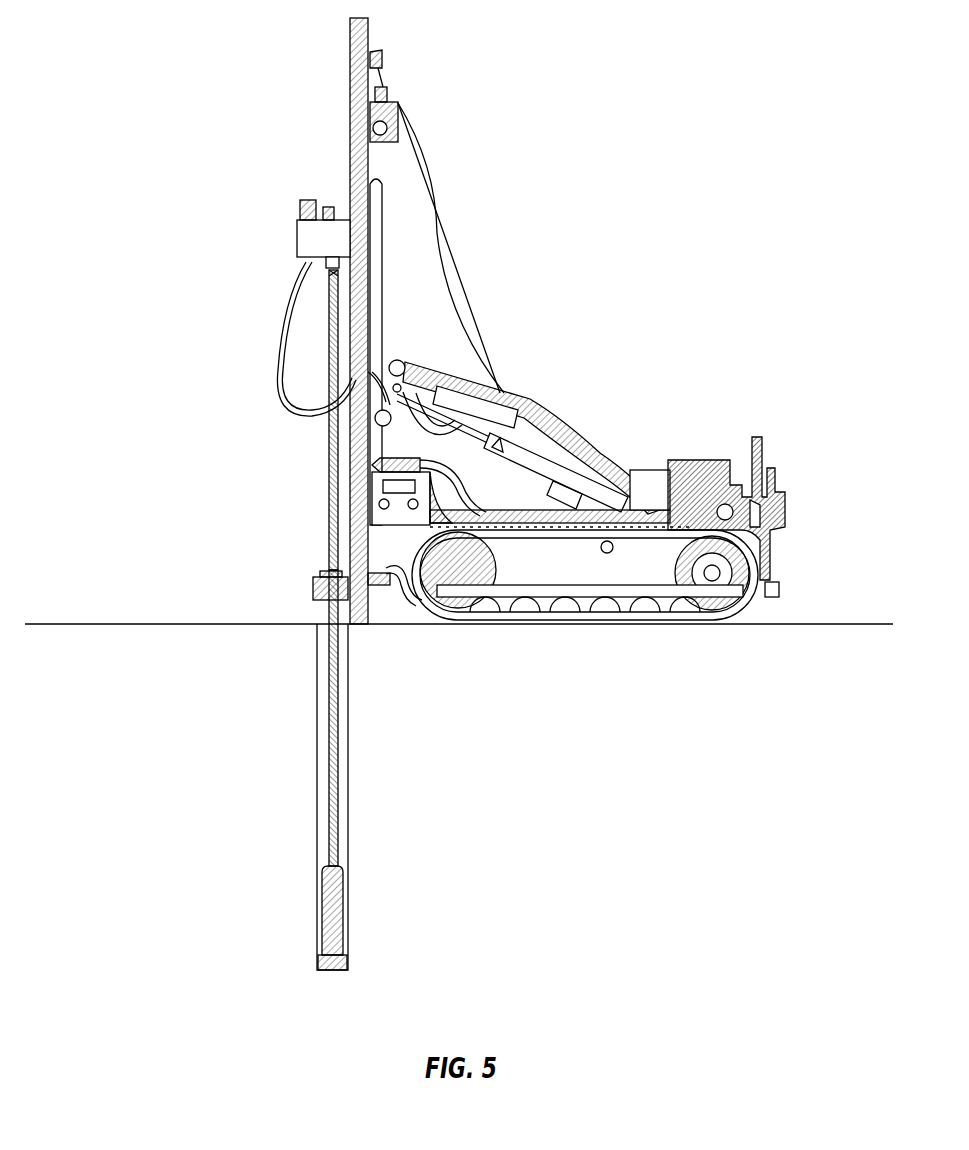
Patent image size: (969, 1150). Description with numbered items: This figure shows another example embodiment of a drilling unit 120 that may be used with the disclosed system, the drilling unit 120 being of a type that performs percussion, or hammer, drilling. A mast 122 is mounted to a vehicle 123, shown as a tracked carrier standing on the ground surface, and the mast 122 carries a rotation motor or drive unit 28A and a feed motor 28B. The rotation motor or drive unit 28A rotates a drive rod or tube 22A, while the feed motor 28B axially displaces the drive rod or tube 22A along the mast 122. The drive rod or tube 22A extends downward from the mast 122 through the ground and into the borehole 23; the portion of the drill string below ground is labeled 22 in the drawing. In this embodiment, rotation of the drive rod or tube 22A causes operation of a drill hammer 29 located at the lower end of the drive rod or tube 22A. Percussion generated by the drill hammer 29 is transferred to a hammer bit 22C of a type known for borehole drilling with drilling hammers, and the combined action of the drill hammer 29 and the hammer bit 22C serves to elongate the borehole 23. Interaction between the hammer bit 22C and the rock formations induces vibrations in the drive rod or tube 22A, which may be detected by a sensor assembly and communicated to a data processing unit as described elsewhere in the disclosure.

The drilling unit 120 is at (520, 135).
The mast 122 is at (350, 124).
The rotation motor or drive unit 28A is at (297, 240).
The feed motor 28B is at (378, 497).
The drive rod or tube 22A is at (328, 492).
The drill string 22 is at (326, 702).
The borehole 23 is at (352, 760).
The drill hammer 29 is at (325, 912).
The hammer bit 22C is at (350, 960).
The vehicle 123 is at (772, 556).